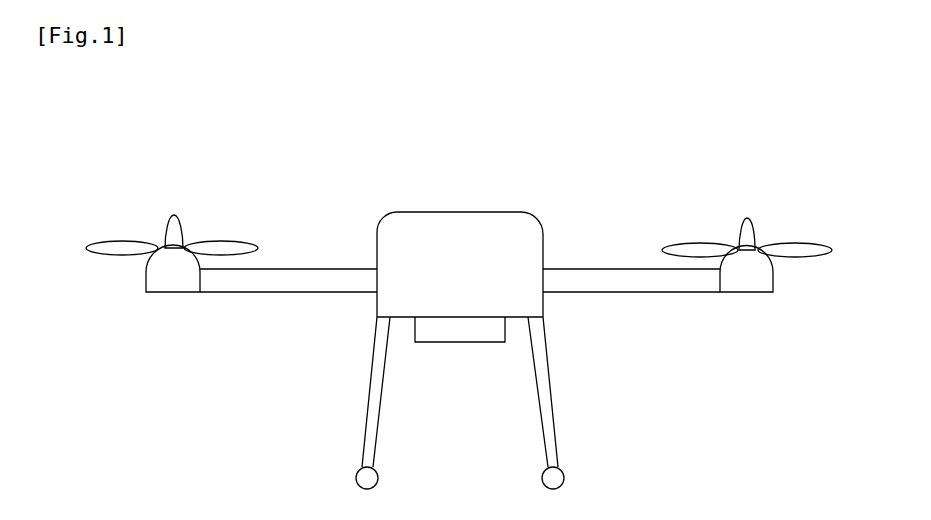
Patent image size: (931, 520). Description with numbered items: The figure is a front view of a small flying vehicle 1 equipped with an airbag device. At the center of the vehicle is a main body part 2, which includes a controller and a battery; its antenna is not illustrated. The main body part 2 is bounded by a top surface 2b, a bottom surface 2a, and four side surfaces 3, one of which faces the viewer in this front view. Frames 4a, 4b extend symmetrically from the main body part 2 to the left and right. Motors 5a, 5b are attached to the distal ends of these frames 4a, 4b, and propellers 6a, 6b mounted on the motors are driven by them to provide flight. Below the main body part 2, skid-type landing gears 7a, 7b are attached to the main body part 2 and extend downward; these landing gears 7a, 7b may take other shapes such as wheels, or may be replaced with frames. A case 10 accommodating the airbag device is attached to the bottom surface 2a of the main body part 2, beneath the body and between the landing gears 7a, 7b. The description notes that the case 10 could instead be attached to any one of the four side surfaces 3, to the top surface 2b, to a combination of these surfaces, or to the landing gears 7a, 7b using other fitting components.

The small flying vehicle 1 is at (505, 191).
The main body part 2 is at (458, 266).
The bottom surface 2a is at (405, 318).
The top surface 2b is at (436, 212).
The side surface 3 is at (546, 240).
The frame 4a is at (243, 292).
The frame 4b is at (648, 293).
The motor 5a is at (168, 285).
The motor 5b is at (750, 285).
The propeller 6a is at (123, 246).
The propeller 6b is at (795, 249).
The landing gear 7a is at (363, 430).
The landing gear 7b is at (557, 425).
The case 10 is at (448, 347).